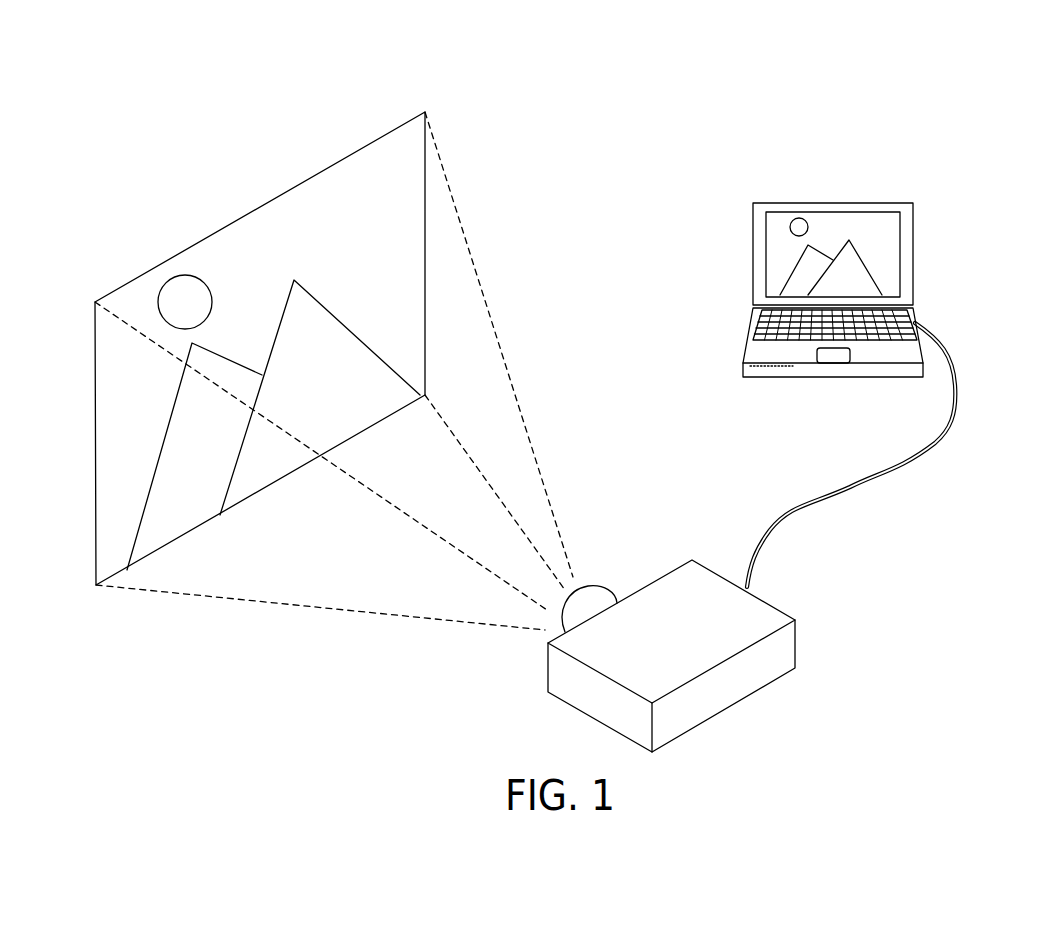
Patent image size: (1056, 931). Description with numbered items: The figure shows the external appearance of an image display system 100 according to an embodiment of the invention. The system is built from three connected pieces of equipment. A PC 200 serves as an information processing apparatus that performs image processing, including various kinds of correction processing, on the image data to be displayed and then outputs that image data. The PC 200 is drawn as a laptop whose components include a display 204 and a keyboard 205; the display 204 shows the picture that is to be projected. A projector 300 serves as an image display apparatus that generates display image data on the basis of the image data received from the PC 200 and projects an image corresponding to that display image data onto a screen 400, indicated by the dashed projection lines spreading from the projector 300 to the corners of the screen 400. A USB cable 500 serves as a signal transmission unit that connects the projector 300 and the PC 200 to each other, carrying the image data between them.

The image display system 100 is at (607, 126).
The PC 200 is at (966, 263).
The display 204 is at (777, 245).
The keyboard 205 is at (762, 332).
The projector 300 is at (765, 678).
The screen 400 is at (352, 168).
The USB cable 500 is at (940, 440).